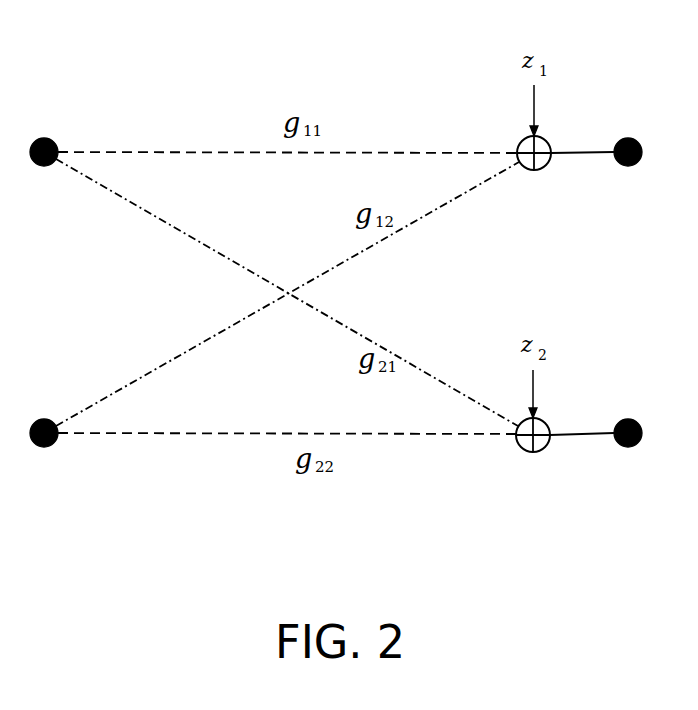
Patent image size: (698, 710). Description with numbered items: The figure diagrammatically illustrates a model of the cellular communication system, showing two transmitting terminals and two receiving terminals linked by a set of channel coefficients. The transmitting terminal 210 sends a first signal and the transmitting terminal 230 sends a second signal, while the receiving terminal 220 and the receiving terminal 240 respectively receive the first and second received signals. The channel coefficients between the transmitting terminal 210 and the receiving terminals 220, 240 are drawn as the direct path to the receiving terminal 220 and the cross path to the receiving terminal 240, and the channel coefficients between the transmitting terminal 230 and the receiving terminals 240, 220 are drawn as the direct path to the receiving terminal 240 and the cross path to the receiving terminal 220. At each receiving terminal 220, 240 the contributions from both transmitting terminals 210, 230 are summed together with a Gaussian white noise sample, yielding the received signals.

The transmitting terminal 210 is at (48, 138).
The receiving terminal 220 is at (630, 138).
The transmitting terminal 230 is at (44, 447).
The receiving terminal 240 is at (624, 447).